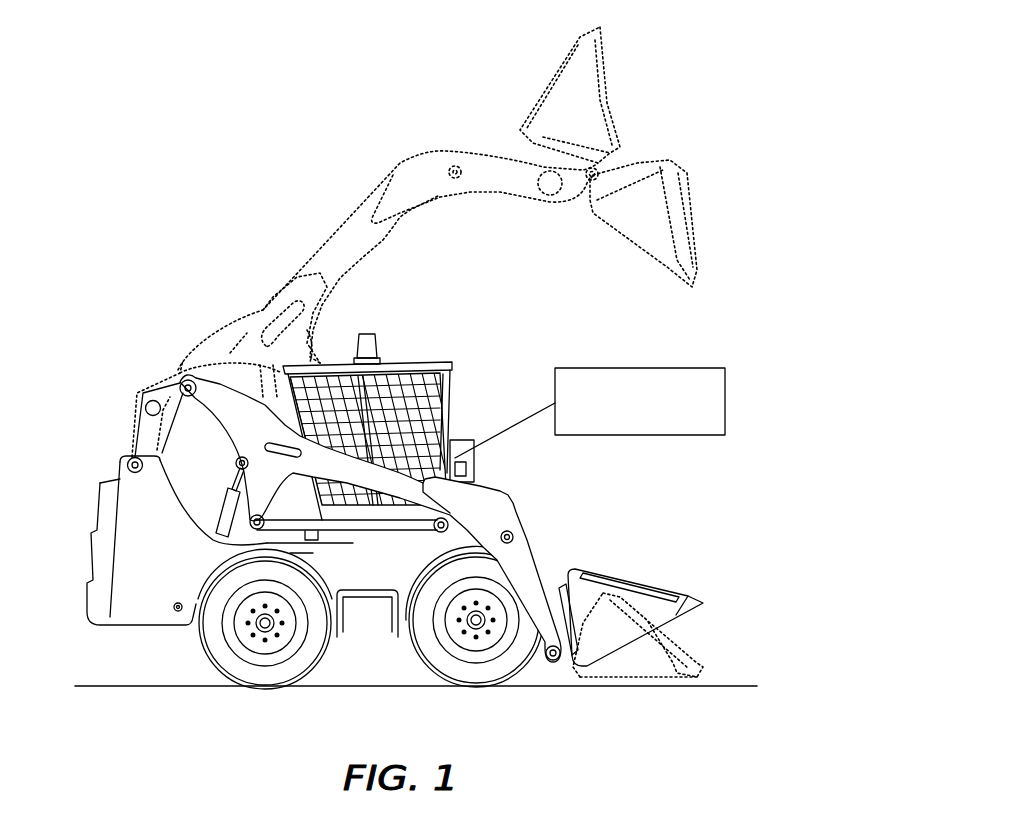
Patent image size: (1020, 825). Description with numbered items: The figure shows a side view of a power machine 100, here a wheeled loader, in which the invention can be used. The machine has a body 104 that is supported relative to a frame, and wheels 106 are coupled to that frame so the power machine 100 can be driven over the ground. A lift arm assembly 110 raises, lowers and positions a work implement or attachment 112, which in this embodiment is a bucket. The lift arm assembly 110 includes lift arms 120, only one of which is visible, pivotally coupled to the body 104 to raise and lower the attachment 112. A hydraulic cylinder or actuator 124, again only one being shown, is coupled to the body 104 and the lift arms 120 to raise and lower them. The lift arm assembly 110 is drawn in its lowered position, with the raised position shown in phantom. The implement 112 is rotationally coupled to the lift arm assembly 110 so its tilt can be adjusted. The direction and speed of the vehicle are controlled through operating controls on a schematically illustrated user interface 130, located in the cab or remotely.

The power machine 100 is at (750, 208).
The body 104 is at (470, 543).
The wheels 106 is at (218, 655).
The lift arm assembly 110 is at (420, 162).
The work implement or attachment 112 is at (652, 160).
The lift arms 120 is at (473, 190).
The hydraulic cylinders or actuators 124 is at (223, 510).
The user interface 130 is at (625, 368).